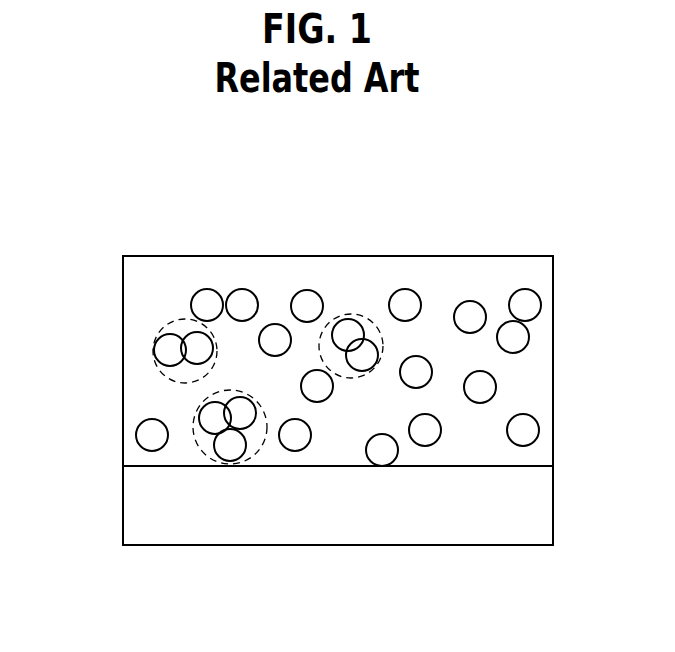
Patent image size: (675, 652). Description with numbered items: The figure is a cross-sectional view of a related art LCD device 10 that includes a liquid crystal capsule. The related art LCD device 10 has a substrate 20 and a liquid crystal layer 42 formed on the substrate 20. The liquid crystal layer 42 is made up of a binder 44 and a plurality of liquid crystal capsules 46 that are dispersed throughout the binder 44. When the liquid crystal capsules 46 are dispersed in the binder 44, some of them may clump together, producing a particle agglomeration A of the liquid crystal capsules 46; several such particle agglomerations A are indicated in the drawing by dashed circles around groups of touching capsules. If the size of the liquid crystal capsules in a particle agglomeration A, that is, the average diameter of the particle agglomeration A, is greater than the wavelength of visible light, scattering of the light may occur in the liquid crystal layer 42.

The related art LCD device 10 is at (352, 197).
The substrate 20 is at (542, 533).
The liquid crystal layer 42 is at (566, 257).
The binder 44 is at (138, 382).
The liquid crystal capsules 46 is at (136, 433).
The particle agglomeration A is at (232, 380).